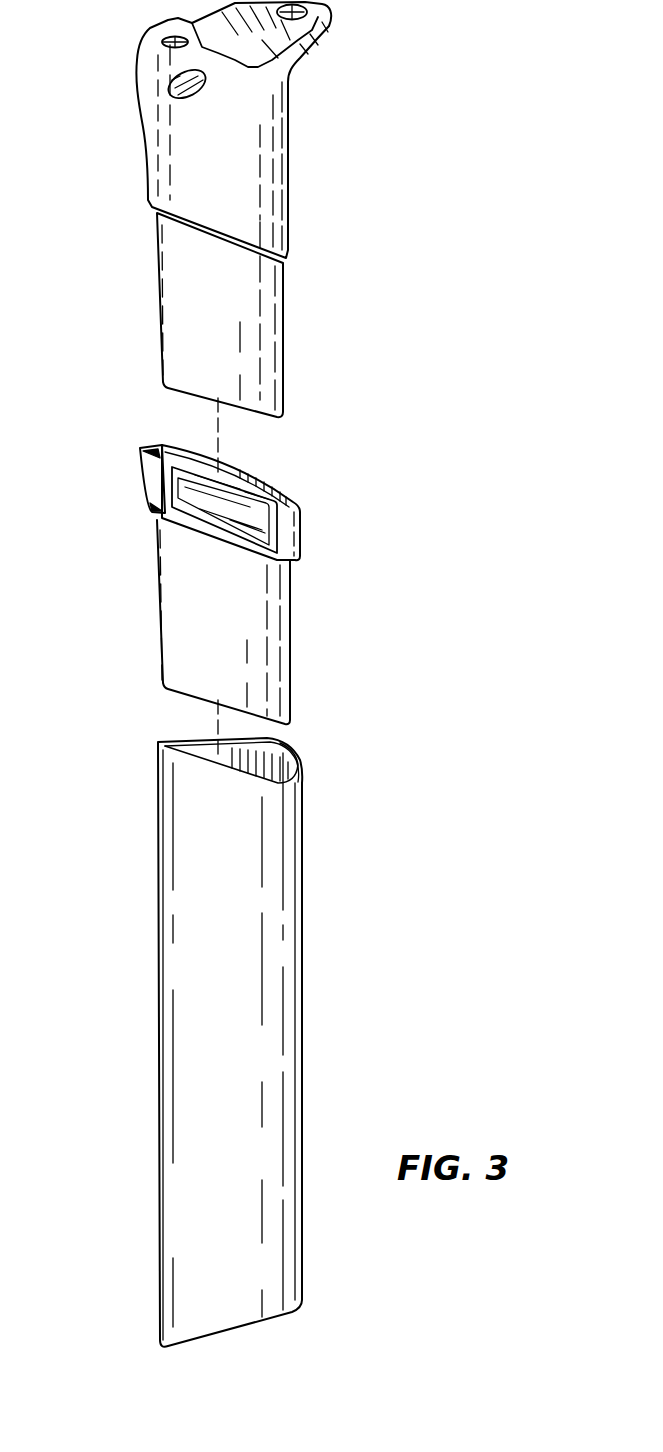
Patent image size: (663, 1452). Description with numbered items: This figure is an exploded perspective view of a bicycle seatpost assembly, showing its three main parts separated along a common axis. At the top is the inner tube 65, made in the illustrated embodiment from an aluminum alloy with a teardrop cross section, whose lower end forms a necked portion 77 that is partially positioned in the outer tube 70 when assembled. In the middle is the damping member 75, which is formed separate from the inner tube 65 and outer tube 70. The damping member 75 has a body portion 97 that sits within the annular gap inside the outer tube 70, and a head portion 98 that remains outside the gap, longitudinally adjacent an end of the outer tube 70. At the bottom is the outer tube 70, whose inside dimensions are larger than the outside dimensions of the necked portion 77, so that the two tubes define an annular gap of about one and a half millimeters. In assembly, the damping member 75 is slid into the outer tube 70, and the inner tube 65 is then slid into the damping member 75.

The inner tube 65 is at (287, 205).
The necked portion 77 is at (268, 342).
The damping member 75 is at (206, 502).
The head portion 98 is at (150, 475).
The body portion 97 is at (177, 593).
The outer tube 70 is at (302, 862).